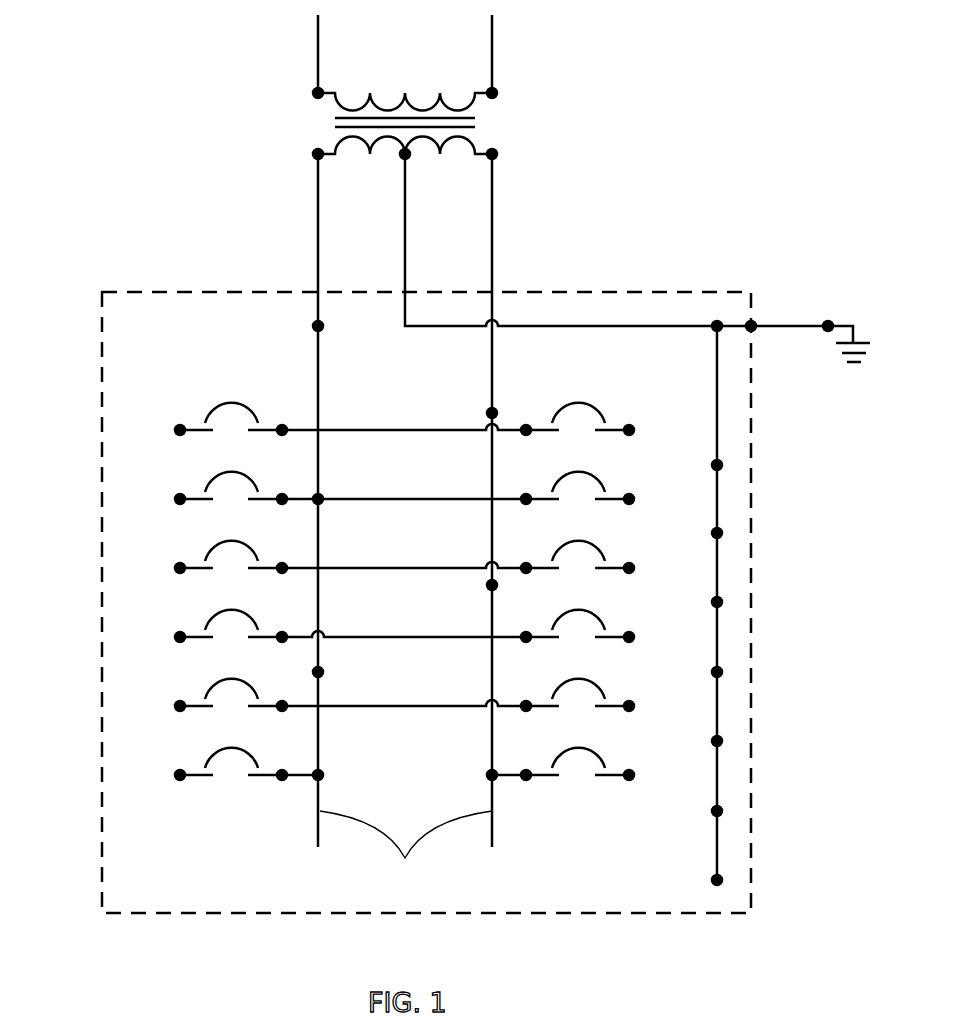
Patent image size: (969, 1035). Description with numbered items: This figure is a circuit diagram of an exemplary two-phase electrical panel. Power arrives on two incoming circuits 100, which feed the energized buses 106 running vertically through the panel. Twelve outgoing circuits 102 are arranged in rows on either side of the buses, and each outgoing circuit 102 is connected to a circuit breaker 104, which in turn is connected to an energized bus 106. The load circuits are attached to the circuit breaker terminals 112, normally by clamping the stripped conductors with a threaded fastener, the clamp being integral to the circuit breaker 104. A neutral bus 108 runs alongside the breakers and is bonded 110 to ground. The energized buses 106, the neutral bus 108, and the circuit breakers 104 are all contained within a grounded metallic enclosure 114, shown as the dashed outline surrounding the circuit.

The incoming circuits 100 is at (318, 380).
The outgoing circuits 102 is at (163, 524).
The circuit breaker 104 is at (197, 777).
The energized bus 106 is at (406, 852).
The neutral bus 108 is at (716, 828).
The bond 110 is at (828, 326).
The terminals 112 is at (180, 637).
The grounded metallic enclosure 114 is at (253, 290).